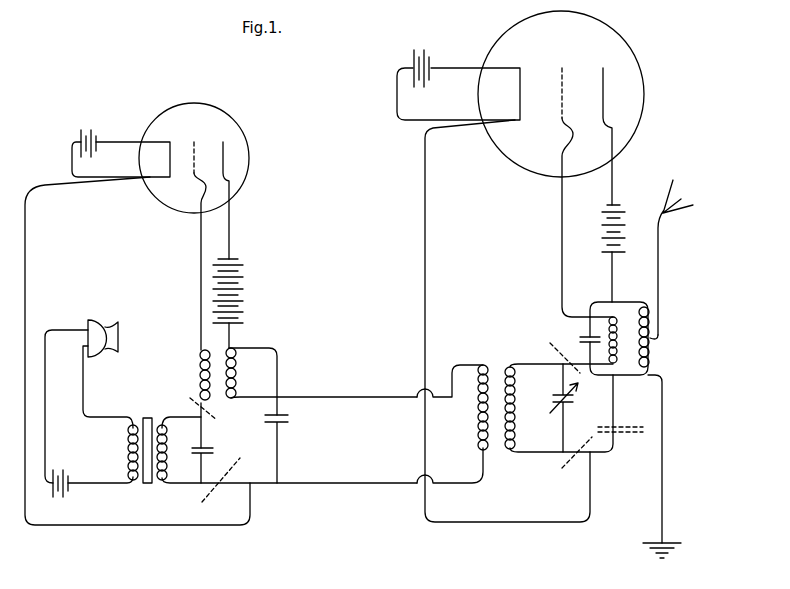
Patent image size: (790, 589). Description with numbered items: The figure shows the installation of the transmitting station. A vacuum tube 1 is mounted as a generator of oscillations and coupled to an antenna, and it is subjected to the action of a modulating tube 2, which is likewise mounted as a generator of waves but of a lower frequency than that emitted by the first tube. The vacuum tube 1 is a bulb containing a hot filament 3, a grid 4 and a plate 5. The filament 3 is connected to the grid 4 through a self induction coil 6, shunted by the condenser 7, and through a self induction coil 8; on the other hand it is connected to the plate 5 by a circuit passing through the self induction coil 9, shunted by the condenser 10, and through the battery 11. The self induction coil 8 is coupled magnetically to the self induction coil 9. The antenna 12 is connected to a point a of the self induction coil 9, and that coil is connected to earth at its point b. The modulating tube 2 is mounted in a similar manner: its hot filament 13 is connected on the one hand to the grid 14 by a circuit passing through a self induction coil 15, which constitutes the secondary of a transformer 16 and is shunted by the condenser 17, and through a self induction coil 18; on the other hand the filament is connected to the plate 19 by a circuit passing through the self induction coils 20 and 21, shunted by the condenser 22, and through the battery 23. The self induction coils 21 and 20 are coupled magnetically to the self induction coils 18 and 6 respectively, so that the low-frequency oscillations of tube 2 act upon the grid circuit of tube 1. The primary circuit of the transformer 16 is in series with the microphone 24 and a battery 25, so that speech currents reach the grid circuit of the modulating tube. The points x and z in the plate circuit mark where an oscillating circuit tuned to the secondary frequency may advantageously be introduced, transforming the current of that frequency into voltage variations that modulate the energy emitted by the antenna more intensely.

The vacuum tube 1 is at (643, 90).
The modulating tube 2 is at (248, 153).
The hot filament 3 is at (459, 84).
The grid 4 is at (573, 182).
The plate 5 is at (605, 126).
The self induction coil 6 is at (559, 408).
The condenser 7 is at (571, 405).
The self induction coil 8 is at (617, 340).
The self induction coil 9 is at (648, 350).
The condenser 10 is at (584, 331).
The battery 11 is at (626, 253).
The antenna 12 is at (677, 256).
The hot filament 13 is at (121, 151).
The grid 14 is at (194, 236).
The self induction coil 15 is at (287, 450).
The transformer 16 is at (140, 440).
The condenser 17 is at (216, 472).
The self induction coil 18 is at (193, 399).
The plate 19 is at (222, 191).
The self induction coil 20 is at (472, 407).
The self induction coil 21 is at (321, 381).
The condenser 22 is at (291, 446).
The battery 23 is at (241, 303).
The microphone 24 is at (86, 325).
The battery 25 is at (93, 494).
The point a is at (662, 327).
The point b is at (650, 372).
The point x is at (624, 417).
The point z is at (623, 442).